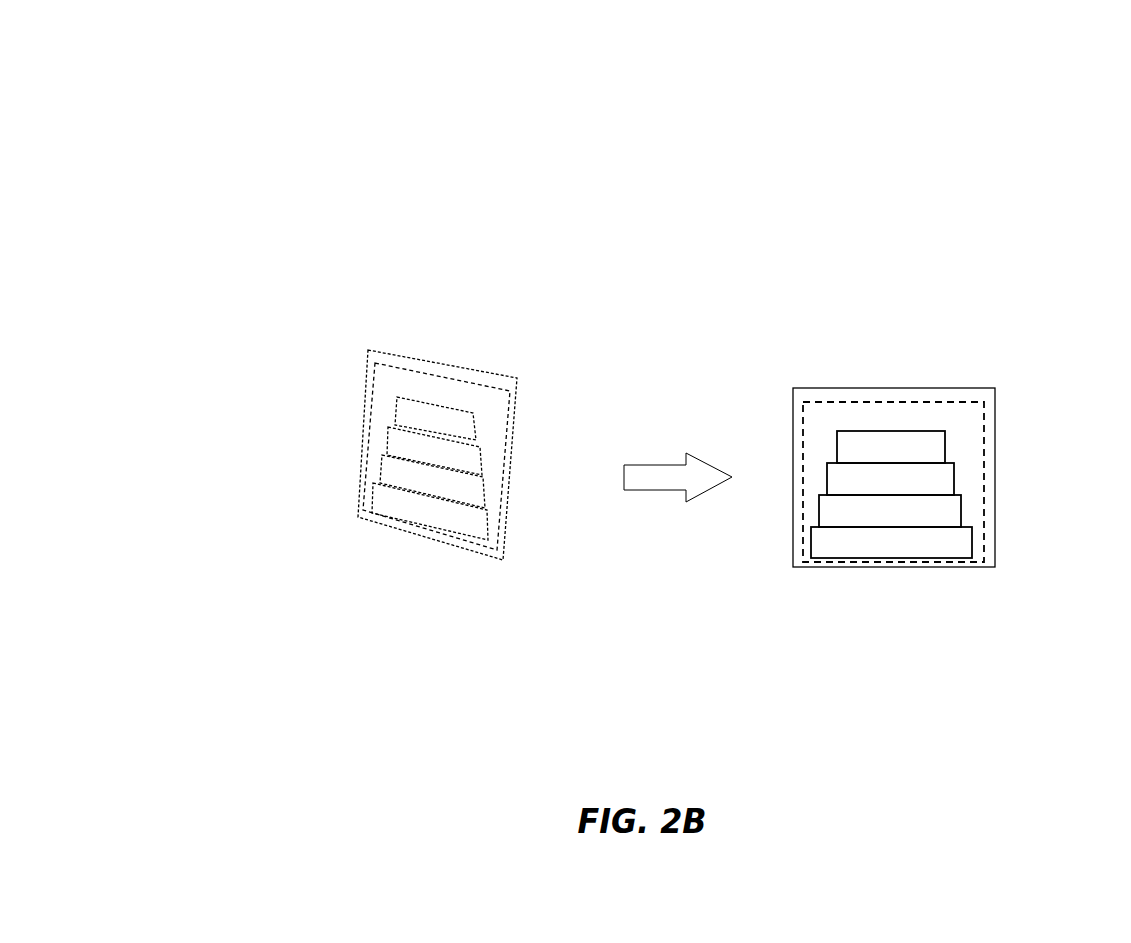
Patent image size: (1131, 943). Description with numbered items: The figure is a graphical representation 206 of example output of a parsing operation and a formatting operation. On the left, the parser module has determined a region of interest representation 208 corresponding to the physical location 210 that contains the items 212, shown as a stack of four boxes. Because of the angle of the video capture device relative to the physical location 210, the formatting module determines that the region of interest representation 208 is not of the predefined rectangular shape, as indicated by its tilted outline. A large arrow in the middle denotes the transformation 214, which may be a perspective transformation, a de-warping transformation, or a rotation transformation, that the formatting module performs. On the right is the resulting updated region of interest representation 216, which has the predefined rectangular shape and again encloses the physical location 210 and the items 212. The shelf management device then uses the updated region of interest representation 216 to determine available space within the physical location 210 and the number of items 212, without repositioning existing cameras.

The graphical representation 206 is at (927, 120).
The region of interest representation 208 is at (367, 415).
The physical location 210 is at (1048, 450).
The items 212 is at (367, 492).
The transformation 214 is at (673, 500).
The updated region of interest representation 216 is at (870, 402).